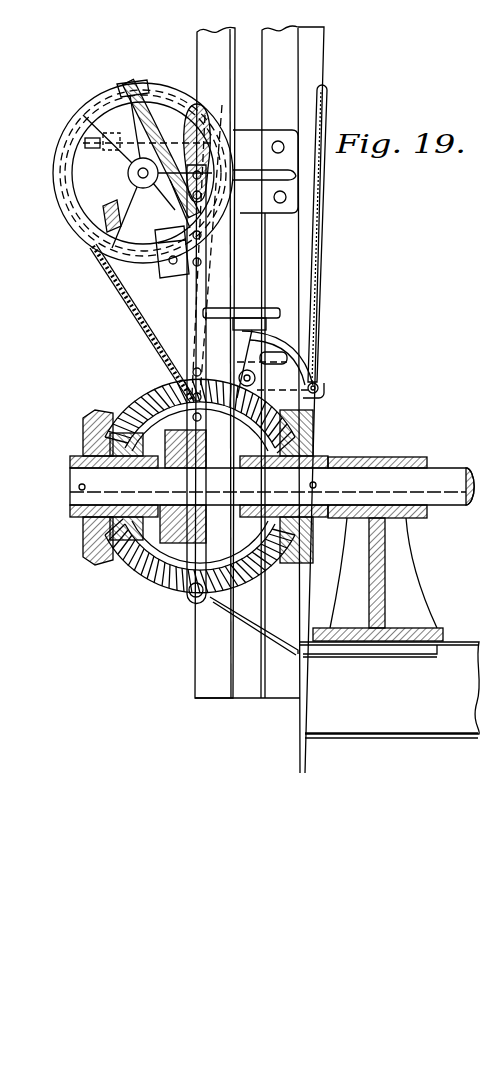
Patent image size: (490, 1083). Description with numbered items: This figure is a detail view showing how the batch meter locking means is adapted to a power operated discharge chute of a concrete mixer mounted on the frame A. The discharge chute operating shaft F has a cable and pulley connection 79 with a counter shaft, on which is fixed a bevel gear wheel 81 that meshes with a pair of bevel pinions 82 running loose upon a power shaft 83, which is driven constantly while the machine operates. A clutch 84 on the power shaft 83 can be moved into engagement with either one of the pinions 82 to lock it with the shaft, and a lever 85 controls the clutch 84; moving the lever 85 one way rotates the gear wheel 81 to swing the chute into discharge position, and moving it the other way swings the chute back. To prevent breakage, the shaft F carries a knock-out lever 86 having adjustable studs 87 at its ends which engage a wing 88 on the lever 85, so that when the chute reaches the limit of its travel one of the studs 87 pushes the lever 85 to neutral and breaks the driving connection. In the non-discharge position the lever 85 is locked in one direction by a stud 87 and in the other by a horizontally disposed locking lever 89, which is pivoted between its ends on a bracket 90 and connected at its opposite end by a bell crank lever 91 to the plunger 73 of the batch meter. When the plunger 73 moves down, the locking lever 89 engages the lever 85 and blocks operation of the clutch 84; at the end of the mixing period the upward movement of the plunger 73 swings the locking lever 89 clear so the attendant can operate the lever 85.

The frame A is at (197, 48).
The discharge chute operating shaft F is at (128, 171).
The plunger 73 is at (326, 228).
The cable and pulley connection 79 is at (109, 290).
The bevel gear wheel 81 is at (144, 394).
The bevel pinions 82 is at (90, 412).
The power shaft 83 is at (443, 470).
The clutch 84 is at (134, 577).
The lever 85 is at (196, 348).
The knock-out lever 86 is at (93, 116).
The adjustable studs 87 is at (145, 82).
The wing 88 is at (172, 279).
The locking lever 89 is at (196, 317).
The bracket 90 is at (283, 321).
The bell crank lever 91 is at (257, 354).